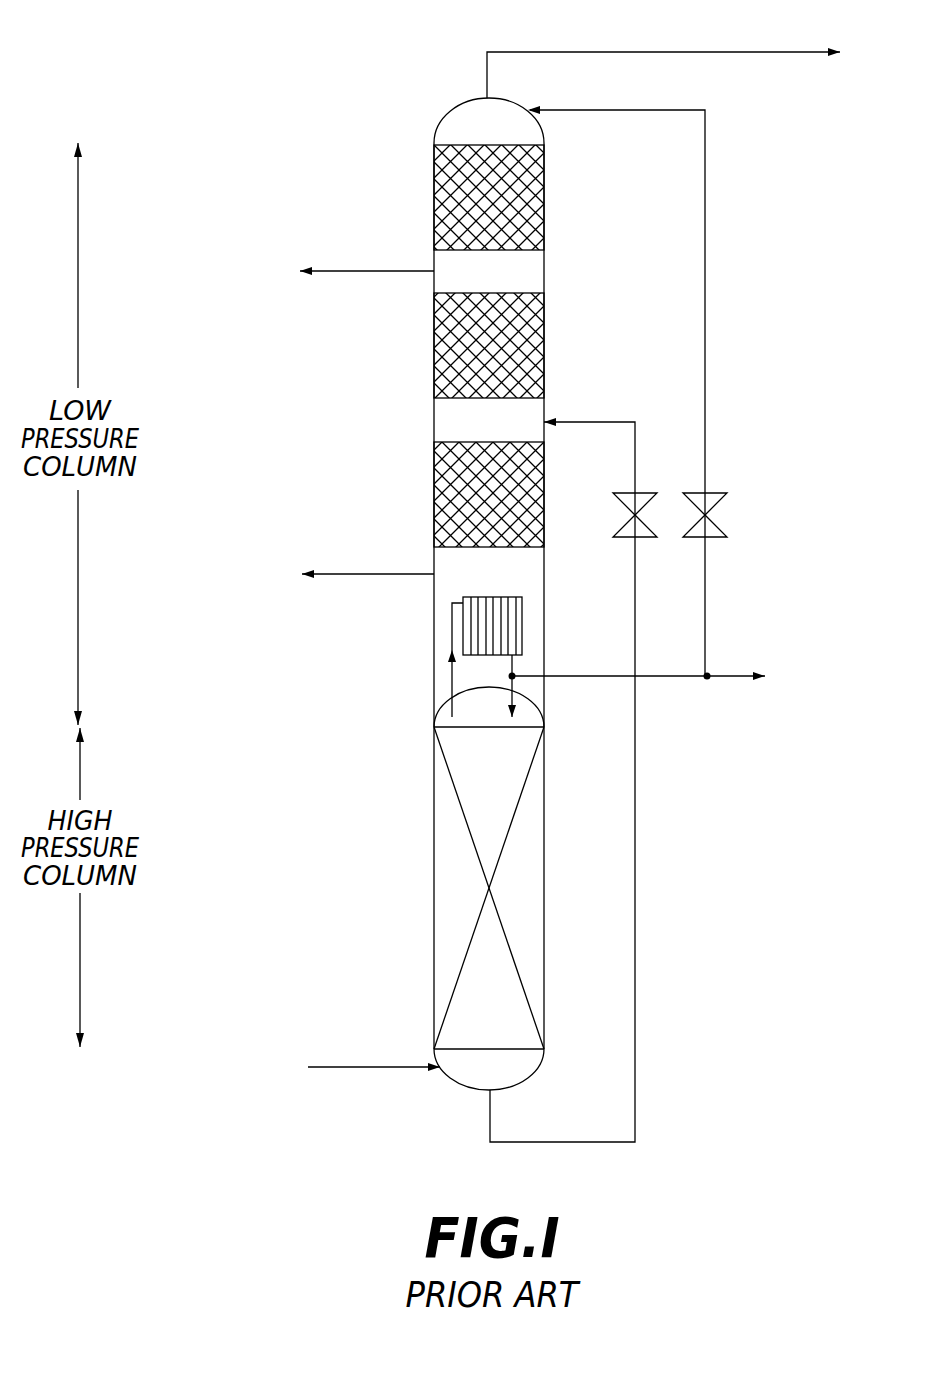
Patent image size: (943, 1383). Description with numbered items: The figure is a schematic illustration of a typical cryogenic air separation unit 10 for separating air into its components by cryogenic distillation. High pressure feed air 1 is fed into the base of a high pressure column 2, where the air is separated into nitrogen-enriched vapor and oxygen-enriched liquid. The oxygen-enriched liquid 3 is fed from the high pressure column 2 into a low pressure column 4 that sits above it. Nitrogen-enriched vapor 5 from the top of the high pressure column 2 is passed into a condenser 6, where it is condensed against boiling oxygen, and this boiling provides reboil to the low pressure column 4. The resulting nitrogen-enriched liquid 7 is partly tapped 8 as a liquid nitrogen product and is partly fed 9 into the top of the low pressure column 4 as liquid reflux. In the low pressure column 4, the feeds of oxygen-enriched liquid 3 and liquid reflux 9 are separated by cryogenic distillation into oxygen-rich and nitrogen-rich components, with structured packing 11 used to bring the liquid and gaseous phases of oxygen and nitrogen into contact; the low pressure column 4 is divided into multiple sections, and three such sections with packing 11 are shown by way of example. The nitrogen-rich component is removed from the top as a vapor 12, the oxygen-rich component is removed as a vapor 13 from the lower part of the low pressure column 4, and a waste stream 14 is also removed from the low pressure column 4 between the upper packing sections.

The high pressure feed air 1 is at (380, 1067).
The high pressure column 2 is at (434, 878).
The oxygen-enriched liquid 3 is at (582, 1142).
The low pressure column 4 is at (544, 268).
The nitrogen-enriched vapor 5 is at (452, 690).
The condenser 6 is at (522, 627).
The nitrogen-enriched liquid 7 is at (512, 665).
The tapped nitrogen-enriched liquid 8 is at (730, 676).
The liquid reflux feed 9 is at (620, 110).
The cryogenic air separation unit 10 is at (391, 64).
The structured packing 11 is at (434, 183).
The nitrogen-rich vapor 12 is at (730, 52).
The oxygen-rich vapor 13 is at (352, 574).
The waste stream 14 is at (397, 271).